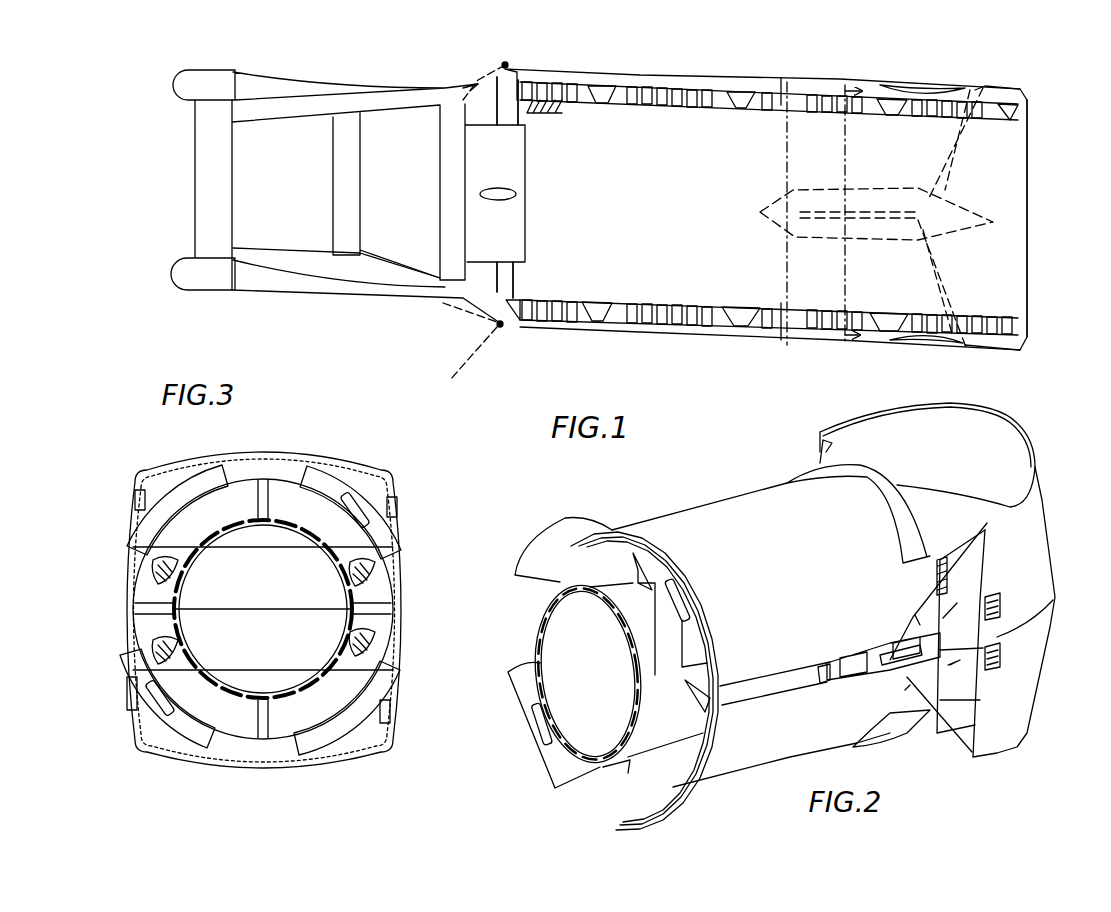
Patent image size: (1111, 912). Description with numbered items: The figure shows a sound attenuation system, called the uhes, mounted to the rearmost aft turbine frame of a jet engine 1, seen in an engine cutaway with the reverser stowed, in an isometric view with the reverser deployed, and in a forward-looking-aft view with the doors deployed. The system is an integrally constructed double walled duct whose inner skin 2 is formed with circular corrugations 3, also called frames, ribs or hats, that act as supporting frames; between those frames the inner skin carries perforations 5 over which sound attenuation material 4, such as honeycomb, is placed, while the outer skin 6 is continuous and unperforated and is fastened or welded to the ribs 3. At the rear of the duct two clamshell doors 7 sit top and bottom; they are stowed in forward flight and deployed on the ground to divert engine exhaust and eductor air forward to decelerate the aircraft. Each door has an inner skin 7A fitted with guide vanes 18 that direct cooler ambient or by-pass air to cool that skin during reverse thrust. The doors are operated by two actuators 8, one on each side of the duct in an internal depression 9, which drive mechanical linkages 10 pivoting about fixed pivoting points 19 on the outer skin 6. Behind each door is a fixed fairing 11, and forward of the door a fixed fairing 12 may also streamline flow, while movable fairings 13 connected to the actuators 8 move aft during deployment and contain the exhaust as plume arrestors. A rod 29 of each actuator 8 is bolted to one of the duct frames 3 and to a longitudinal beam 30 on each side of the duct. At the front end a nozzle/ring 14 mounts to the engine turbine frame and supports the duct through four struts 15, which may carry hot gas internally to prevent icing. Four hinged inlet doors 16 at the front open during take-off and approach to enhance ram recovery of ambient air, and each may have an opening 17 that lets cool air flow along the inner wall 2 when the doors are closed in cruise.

In FIG. 1, the jet engine 1 is at (310, 228).
In FIG. 1, the inner skin 2 is at (695, 85).
In FIG. 1, the circular corrugations 3 is at (512, 72).
In FIG. 1, the sound attenuation material 4 is at (666, 93).
In FIG. 1, the perforations 5 is at (545, 116).
In FIG. 1, the outer skin 6 is at (640, 85).
In FIG. 1, the clamshell doors 7 is at (848, 82).
In FIG. 3, the clamshell doors 7 is at (282, 450).
In FIG. 2, the clamshell doors 7 is at (1003, 760).
In FIG. 1, the thrust reverser door inner skin 7A is at (948, 92).
In FIG. 2, the actuator 8 is at (890, 660).
In FIG. 1, the internal depression 9 is at (865, 188).
In FIG. 2, the internal depression 9 is at (860, 648).
In FIG. 2, the mechanical linkages 10 is at (814, 452).
In FIG. 1, the fixed fairing 11 is at (998, 88).
In FIG. 2, the fixed fairing 11 is at (882, 470).
In FIG. 1, the fixed fairing 12 is at (748, 75).
In FIG. 1, the movable fairings 13 is at (1010, 180).
In FIG. 2, the movable fairings 13 is at (946, 567).
In FIG. 1, the nozzle/ring 14 is at (495, 130).
In FIG. 3, the nozzle/ring 14 is at (200, 548).
In FIG. 2, the nozzle/ring 14 is at (540, 617).
In FIG. 1, the struts 15 is at (504, 125).
In FIG. 3, the struts 15 is at (272, 500).
In FIG. 2, the struts 15 is at (638, 585).
In FIG. 1, the hinged inlet doors 16 is at (477, 74).
In FIG. 3, the hinged inlet doors 16 is at (158, 497).
In FIG. 2, the hinged inlet doors 16 is at (578, 520).
In FIG. 3, the opening 17 is at (360, 495).
In FIG. 2, the opening 17 is at (688, 598).
In FIG. 3, the guide vanes 18 is at (263, 608).
In FIG. 2, the guide vanes 18 is at (998, 597).
In FIG. 2, the fixed pivoting points 19 is at (934, 647).
In FIG. 2, the rod 29 is at (822, 665).
In FIG. 2, the longitudinal beam 30 is at (745, 683).